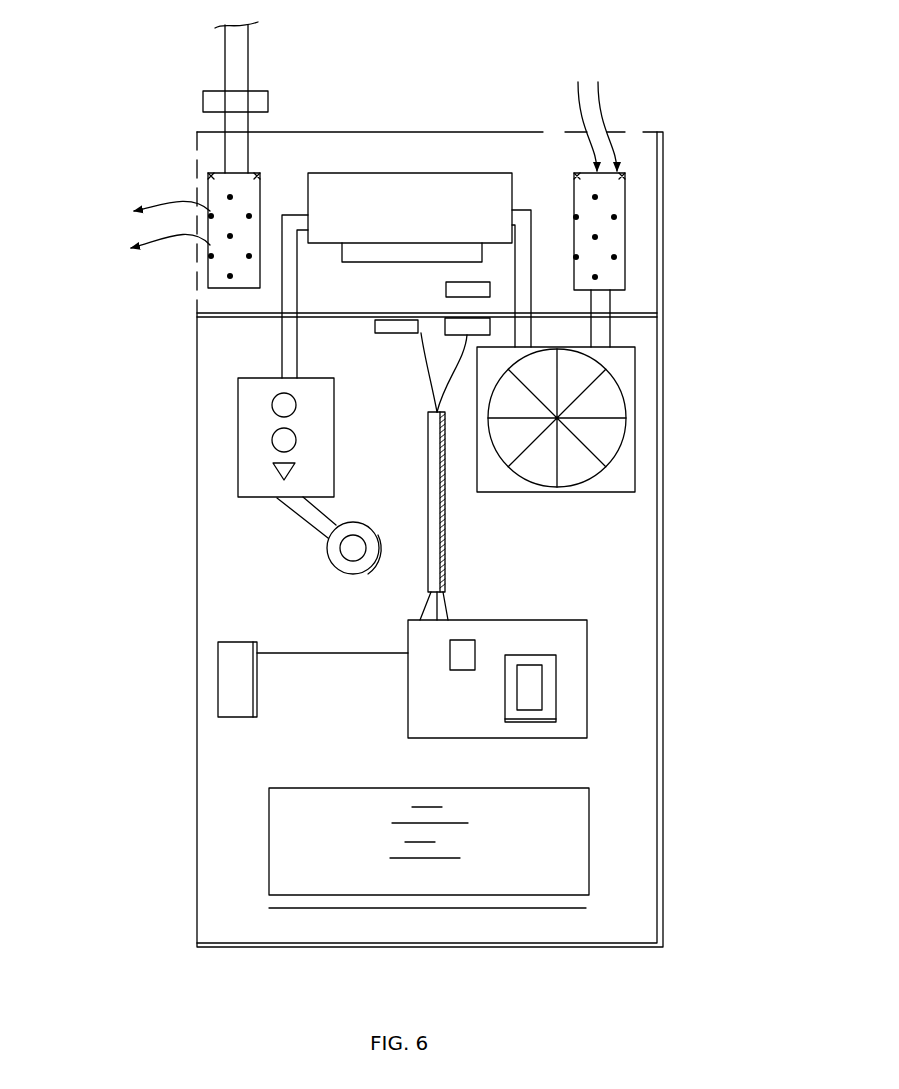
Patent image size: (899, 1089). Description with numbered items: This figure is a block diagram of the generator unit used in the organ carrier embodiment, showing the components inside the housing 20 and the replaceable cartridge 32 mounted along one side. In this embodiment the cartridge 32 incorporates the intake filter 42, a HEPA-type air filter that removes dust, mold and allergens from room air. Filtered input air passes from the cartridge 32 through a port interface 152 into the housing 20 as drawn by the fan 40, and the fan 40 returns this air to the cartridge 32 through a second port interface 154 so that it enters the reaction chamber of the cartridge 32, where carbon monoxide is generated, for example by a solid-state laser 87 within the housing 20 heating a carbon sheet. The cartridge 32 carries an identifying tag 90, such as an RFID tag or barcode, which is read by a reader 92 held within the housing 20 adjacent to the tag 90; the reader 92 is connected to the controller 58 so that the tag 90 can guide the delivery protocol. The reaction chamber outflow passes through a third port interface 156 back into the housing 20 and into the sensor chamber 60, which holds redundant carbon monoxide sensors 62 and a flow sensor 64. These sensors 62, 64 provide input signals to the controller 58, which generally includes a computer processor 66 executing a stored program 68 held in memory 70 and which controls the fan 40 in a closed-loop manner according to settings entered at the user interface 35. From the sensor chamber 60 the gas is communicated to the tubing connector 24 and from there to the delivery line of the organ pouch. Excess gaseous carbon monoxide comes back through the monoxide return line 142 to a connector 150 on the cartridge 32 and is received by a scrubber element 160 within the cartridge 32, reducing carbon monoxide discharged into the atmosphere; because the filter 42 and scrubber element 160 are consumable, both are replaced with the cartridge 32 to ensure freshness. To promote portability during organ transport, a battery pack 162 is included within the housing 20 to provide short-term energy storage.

The housing 20 is at (663, 875).
The tubing connector 24 is at (328, 548).
The cartridge 32 is at (645, 132).
The user interface 35 is at (218, 697).
The fan 40 is at (604, 412).
The air filter 42 is at (620, 216).
The controller 58 is at (587, 620).
The sensor chamber 60 is at (266, 498).
The carbon monoxide sensors 62 is at (272, 442).
The flow sensor 64 is at (278, 466).
The computer processor 66 is at (460, 658).
The stored program 68 is at (532, 693).
The memory 70 is at (556, 665).
The solid-state laser 87 is at (375, 326).
The identifying tag 90 is at (446, 290).
The reader 92 is at (445, 360).
The monoxide return line 142 is at (248, 62).
The connector 150 is at (203, 104).
The port interface 152 is at (622, 310).
The second port interface 154 is at (538, 321).
The third port interface 156 is at (245, 335).
The scrubber element 160 is at (210, 190).
The battery pack 162 is at (538, 837).